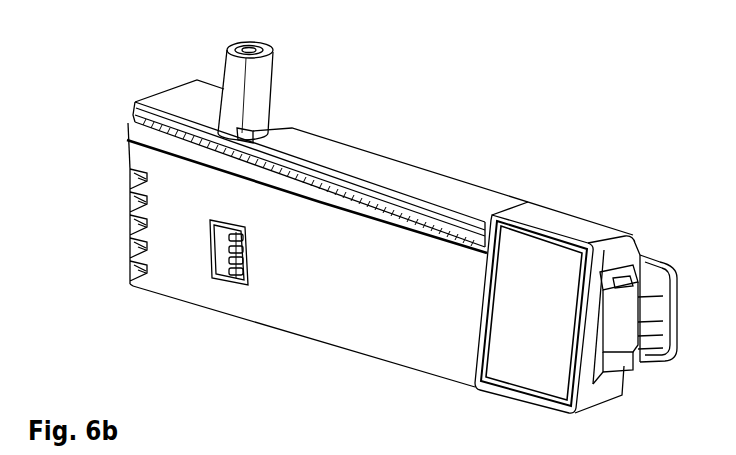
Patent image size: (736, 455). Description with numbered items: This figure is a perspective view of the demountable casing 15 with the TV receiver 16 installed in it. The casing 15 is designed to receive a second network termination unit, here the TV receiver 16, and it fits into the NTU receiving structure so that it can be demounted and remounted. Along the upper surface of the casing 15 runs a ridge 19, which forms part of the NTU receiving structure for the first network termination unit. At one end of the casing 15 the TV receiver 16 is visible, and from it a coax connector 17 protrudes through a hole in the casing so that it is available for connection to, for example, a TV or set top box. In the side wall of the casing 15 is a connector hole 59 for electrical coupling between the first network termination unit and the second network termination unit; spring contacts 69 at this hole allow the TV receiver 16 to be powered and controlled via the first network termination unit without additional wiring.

The demountable casing 15 is at (479, 184).
The TV receiver 16 is at (530, 363).
The coax connector 17 is at (272, 92).
The ridge 19 is at (130, 135).
The connector hole 59 is at (210, 249).
The spring contacts 69 is at (236, 270).